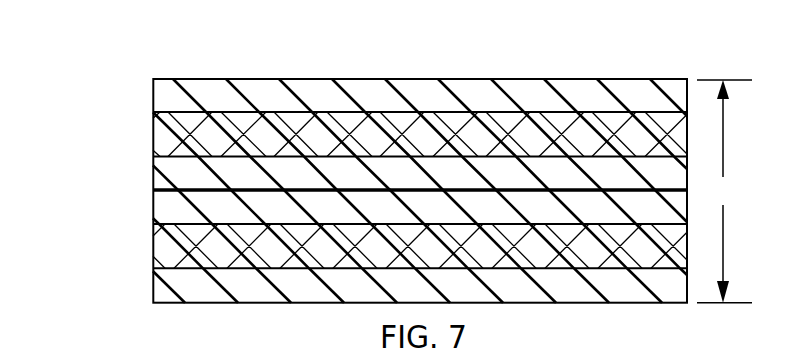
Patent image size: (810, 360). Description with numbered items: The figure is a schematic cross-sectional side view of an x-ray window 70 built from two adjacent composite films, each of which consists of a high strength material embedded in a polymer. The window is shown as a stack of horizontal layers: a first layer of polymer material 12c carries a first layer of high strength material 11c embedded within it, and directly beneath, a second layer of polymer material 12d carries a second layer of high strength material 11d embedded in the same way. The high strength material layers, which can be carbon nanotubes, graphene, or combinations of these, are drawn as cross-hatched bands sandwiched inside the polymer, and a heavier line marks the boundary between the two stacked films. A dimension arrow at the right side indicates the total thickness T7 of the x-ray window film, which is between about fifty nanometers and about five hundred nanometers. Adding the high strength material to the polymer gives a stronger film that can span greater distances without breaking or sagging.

The x-ray window 70 is at (337, 55).
The polymer material layer 12c is at (167, 90).
The high strength material layer 11c is at (167, 140).
The polymer material layer 12d is at (160, 203).
The high strength material layer 11d is at (160, 236).
The thickness T7 is at (724, 191).